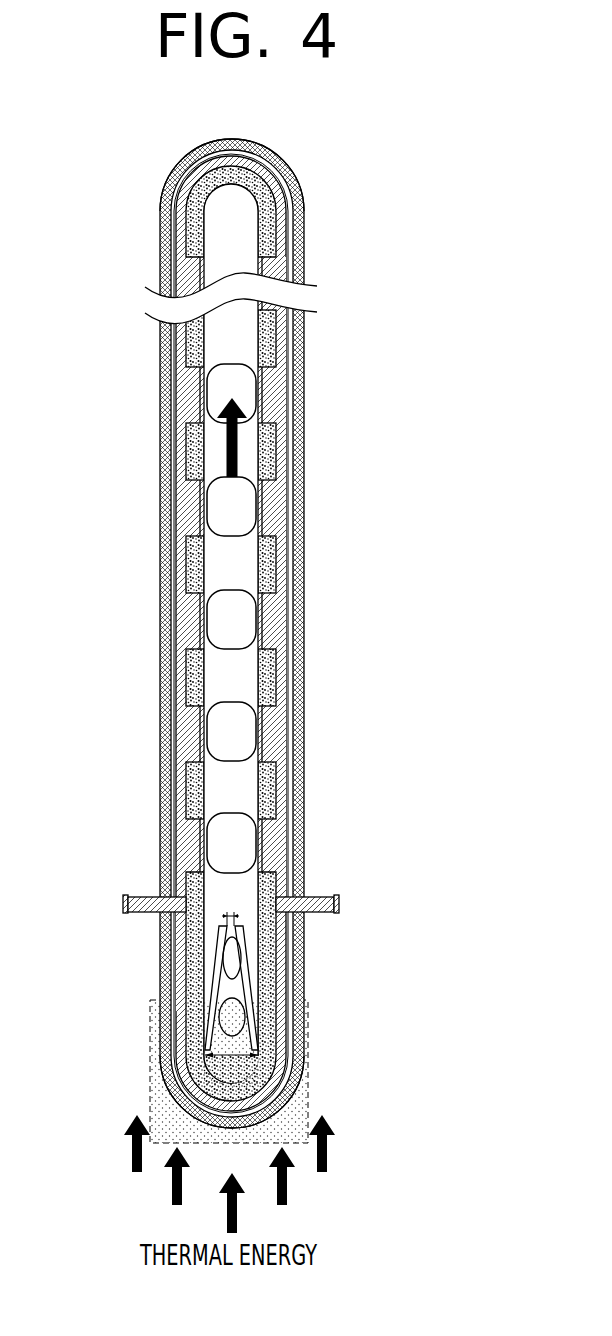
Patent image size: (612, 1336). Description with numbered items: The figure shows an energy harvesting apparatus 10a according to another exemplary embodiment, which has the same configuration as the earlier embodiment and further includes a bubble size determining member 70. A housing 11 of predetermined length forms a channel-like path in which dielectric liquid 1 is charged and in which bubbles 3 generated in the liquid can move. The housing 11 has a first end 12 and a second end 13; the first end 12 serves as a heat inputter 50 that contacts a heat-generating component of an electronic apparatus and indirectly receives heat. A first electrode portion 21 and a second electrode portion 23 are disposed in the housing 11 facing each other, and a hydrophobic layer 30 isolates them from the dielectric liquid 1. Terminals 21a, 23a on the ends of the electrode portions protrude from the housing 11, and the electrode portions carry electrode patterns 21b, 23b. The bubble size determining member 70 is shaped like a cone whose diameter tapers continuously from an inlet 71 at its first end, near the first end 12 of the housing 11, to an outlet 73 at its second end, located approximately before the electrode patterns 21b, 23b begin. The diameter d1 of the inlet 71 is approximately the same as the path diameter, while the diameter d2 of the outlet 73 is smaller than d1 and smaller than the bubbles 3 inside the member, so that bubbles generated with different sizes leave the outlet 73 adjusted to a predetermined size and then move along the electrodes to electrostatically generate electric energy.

The energy harvesting apparatus 10a is at (160, 107).
The dielectric liquid 1 is at (223, 345).
The bubble 3 is at (223, 490).
The housing 11 is at (305, 417).
The first end 12 is at (313, 1088).
The second end 13 is at (313, 165).
The first electrode portion 21 is at (170, 607).
The terminal 21a is at (138, 898).
The electrode pattern 21b is at (200, 716).
The second electrode portion 23 is at (296, 488).
The terminal 23a is at (325, 897).
The electrode pattern 23b is at (262, 598).
The hydrophobic layer 30 is at (177, 947).
The heat inputter 50 is at (150, 1078).
The bubble size determining member 70 is at (268, 968).
The inlet 71 is at (243, 1068).
The outlet 73 is at (233, 927).
The diameter of the inlet d1 is at (242, 1052).
The diameter of the outlet d2 is at (235, 915).